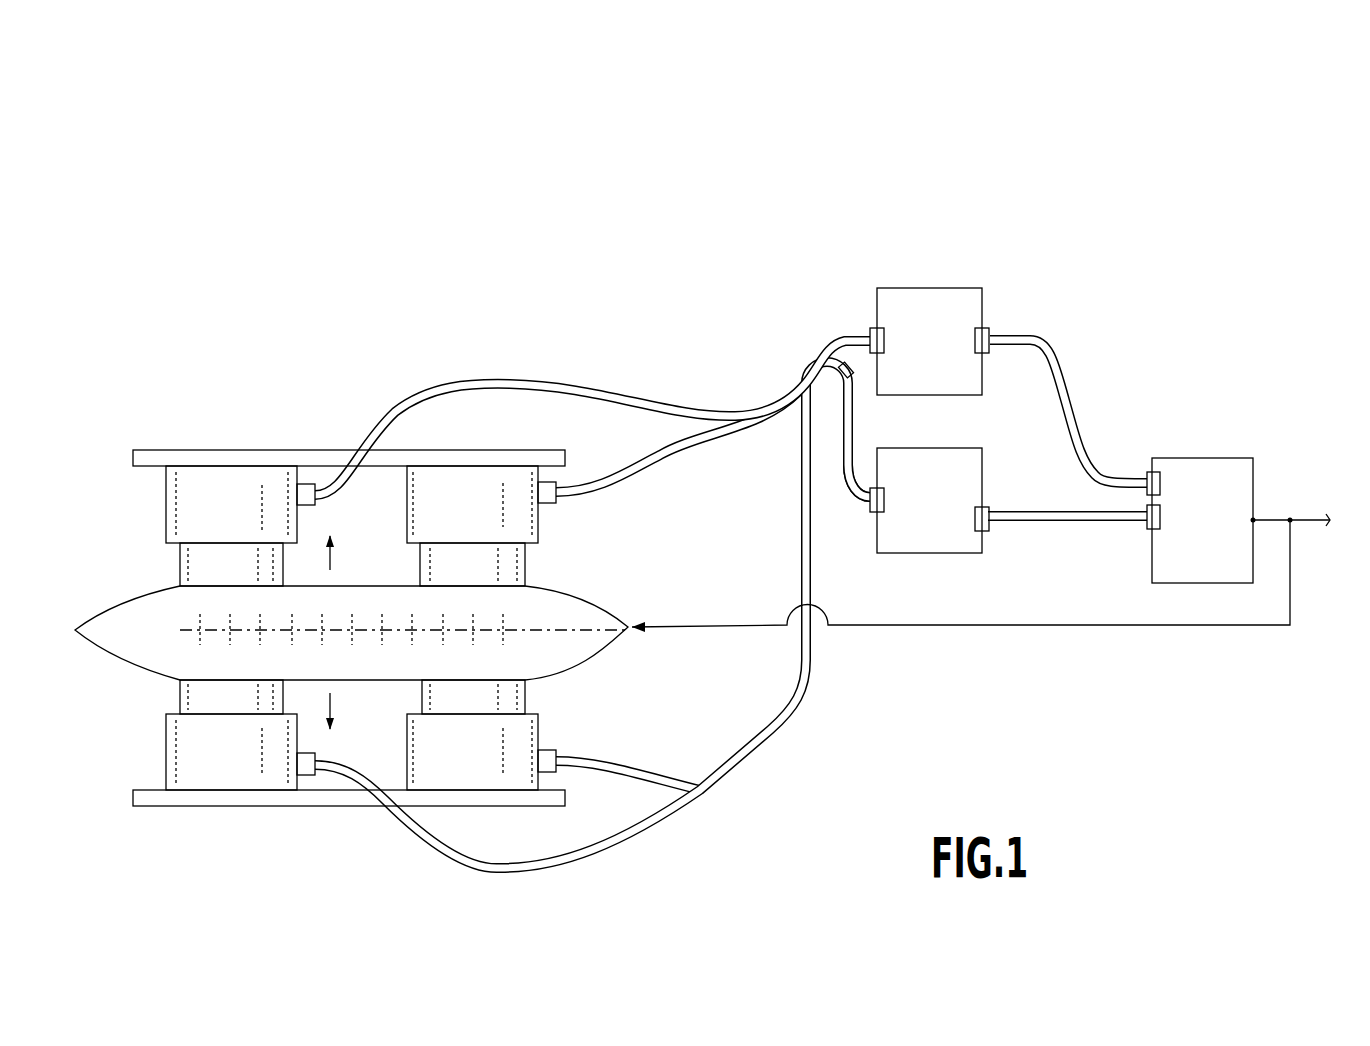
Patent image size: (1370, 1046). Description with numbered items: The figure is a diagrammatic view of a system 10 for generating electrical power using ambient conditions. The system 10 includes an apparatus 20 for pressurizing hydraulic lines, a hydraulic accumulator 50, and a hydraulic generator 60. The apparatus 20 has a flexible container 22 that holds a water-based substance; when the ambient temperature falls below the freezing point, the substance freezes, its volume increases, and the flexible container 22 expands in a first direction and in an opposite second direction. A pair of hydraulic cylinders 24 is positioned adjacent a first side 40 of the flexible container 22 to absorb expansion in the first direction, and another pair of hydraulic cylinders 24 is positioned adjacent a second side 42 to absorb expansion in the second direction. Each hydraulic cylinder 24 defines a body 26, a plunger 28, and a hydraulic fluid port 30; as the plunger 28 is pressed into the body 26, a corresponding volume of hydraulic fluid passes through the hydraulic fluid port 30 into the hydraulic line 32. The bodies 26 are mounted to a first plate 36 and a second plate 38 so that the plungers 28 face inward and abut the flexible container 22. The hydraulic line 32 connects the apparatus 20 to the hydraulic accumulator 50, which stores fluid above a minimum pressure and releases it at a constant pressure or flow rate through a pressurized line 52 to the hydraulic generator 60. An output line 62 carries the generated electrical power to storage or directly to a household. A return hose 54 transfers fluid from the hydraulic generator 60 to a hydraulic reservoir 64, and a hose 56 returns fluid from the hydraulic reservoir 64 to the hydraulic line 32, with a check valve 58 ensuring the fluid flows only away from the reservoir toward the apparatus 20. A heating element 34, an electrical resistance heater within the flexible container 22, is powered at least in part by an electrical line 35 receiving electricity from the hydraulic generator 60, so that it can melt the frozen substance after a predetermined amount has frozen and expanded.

The system 10 is at (215, 222).
The apparatus 20 is at (361, 606).
The flexible container 22 is at (345, 641).
The hydraulic cylinder 24 is at (191, 481).
The body 26 is at (167, 492).
The plunger 28 is at (183, 565).
The hydraulic fluid port 30 is at (311, 486).
The hydraulic line 32 is at (493, 382).
The heating element 34 is at (245, 630).
The electrical line 35 is at (985, 627).
The first plate 36 is at (568, 458).
The second plate 38 is at (567, 800).
The first side 40 is at (385, 560).
The second side 42 is at (385, 700).
The hydraulic accumulator 50 is at (930, 298).
The pressurized line 52 is at (1060, 368).
The return hose 54 is at (1098, 522).
The hose 56 is at (858, 440).
The check valve 58 is at (846, 364).
The hydraulic generator 60 is at (1200, 462).
The output line 62 is at (1270, 517).
The hydraulic reservoir 64 is at (949, 550).